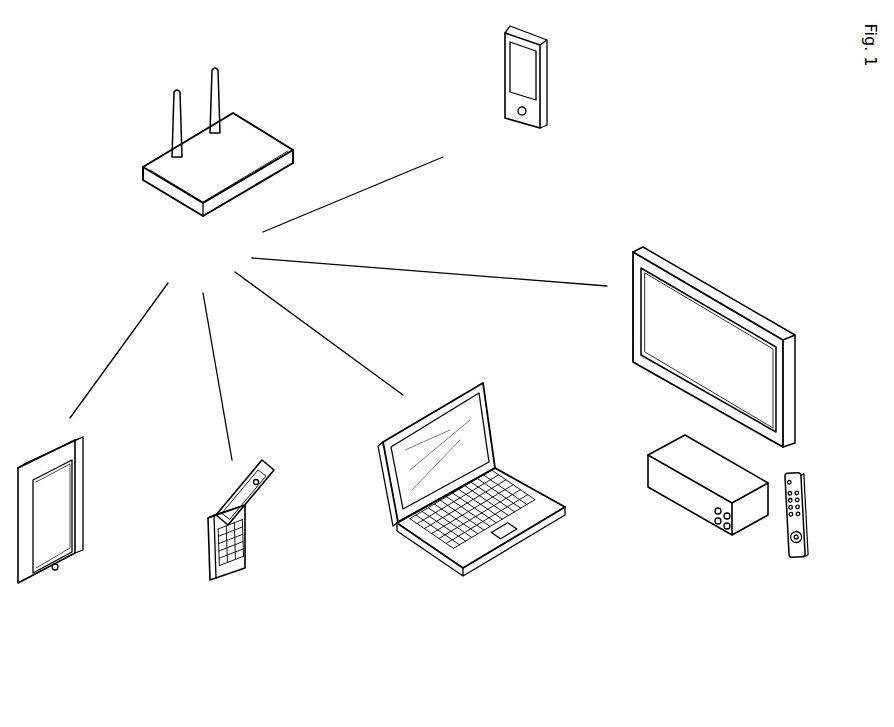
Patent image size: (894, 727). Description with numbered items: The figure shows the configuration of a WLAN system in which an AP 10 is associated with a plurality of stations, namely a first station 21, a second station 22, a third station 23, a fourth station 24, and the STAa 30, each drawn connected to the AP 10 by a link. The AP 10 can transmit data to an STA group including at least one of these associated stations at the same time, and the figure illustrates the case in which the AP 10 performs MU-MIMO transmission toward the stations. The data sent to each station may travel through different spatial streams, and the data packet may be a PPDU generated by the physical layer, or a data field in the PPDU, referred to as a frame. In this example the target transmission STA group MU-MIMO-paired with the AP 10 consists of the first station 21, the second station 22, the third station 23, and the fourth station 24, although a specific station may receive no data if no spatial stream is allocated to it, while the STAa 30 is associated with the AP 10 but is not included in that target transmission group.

The AP 10 is at (218, 176).
The STAa 30 is at (521, 109).
The STA 1 21 is at (49, 544).
The STA 2 22 is at (237, 555).
The STA 3 23 is at (471, 508).
The STA 4 24 is at (720, 423).